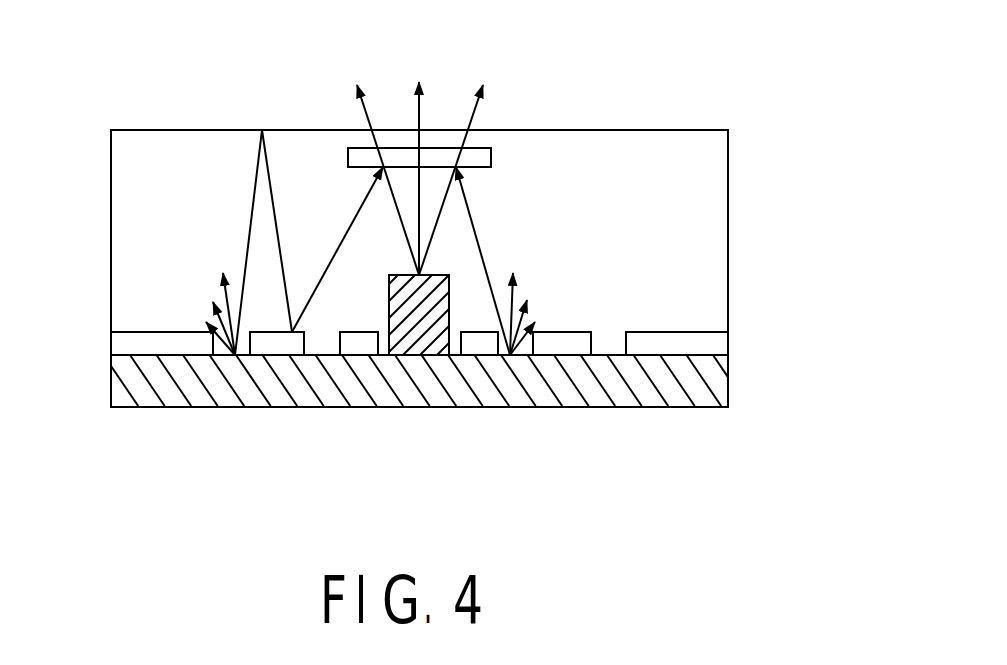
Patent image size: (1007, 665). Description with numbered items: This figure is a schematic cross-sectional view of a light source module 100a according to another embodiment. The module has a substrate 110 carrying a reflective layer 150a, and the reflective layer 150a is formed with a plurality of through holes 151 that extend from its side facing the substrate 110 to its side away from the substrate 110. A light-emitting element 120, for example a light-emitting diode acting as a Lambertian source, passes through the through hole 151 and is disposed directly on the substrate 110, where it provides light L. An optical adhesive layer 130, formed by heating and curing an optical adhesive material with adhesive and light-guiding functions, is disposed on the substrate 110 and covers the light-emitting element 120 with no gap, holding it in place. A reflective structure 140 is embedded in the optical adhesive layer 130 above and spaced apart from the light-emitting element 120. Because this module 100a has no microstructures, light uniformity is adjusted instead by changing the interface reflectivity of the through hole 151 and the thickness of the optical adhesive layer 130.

The light source module 100a is at (92, 39).
The substrate 110 is at (705, 382).
The light-emitting element 120 is at (418, 315).
The optical adhesive layer 130 is at (703, 150).
The reflective structure 140 is at (480, 157).
The reflective layer 150a is at (705, 342).
The through hole 151 is at (616, 331).
The light L is at (477, 108).